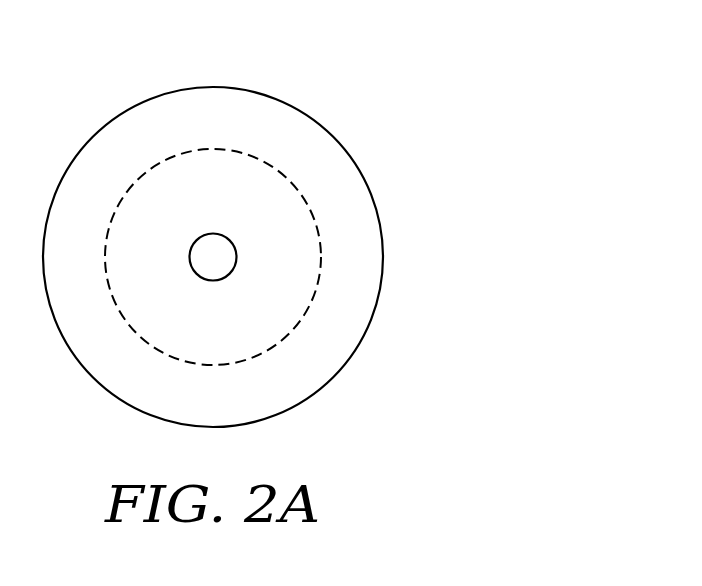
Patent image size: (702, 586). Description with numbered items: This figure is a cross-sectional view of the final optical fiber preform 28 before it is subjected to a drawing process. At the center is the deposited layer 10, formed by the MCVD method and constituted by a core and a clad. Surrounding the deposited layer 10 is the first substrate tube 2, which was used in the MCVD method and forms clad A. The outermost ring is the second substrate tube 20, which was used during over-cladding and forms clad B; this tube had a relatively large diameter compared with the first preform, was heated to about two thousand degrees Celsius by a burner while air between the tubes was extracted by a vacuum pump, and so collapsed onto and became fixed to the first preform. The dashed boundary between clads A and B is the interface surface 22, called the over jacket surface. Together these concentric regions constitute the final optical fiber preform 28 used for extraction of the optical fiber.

The final optical fiber preform 28 is at (418, 99).
The second substrate tube 20 is at (137, 138).
The first substrate tube 2 is at (235, 257).
The interface surface 22 is at (320, 257).
The deposited layer 10 is at (214, 258).